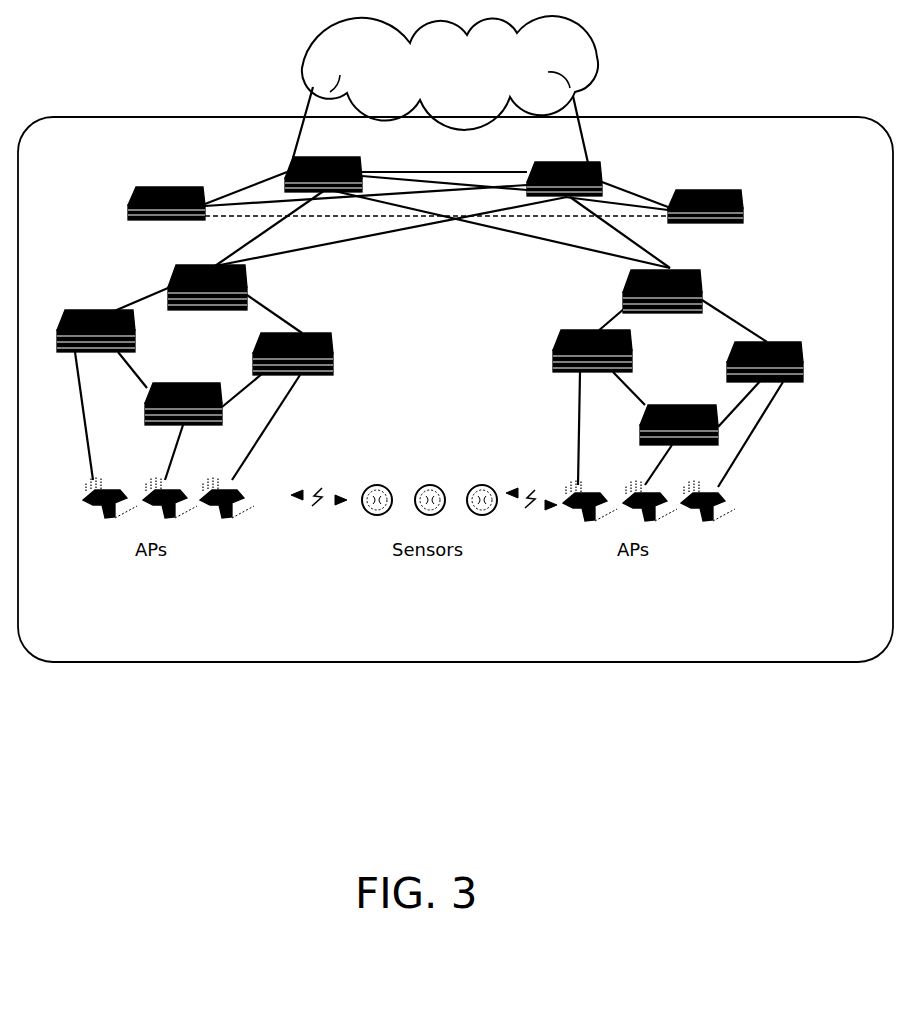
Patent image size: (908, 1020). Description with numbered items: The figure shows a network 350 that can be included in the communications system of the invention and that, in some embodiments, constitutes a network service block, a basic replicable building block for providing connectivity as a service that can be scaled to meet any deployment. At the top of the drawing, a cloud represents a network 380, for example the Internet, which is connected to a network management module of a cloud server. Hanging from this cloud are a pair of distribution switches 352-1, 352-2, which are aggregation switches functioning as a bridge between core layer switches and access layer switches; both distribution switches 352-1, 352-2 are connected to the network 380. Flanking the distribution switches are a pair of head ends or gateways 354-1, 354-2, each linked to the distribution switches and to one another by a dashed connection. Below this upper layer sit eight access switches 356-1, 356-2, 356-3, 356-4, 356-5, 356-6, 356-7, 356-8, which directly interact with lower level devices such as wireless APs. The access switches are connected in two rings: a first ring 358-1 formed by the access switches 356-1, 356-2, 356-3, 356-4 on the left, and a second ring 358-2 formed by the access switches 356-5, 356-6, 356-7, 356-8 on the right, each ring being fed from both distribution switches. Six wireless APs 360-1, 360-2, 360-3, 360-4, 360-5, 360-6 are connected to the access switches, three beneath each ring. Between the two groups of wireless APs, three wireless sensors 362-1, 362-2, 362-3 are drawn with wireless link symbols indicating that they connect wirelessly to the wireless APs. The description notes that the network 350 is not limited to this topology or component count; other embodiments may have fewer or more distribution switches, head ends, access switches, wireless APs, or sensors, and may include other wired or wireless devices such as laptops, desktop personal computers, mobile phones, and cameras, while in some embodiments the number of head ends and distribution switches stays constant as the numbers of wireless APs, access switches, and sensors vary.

The network 350 is at (455, 389).
The network 380 is at (320, 55).
The distribution switch 352-1 is at (347, 160).
The distribution switch 352-2 is at (538, 163).
The head end 354-1 is at (130, 207).
The head end 354-2 is at (743, 207).
The access switch 356-1 is at (175, 267).
The access switch 356-2 is at (73, 310).
The access switch 356-3 is at (148, 405).
The access switch 356-4 is at (330, 347).
The access switch 356-5 is at (723, 268).
The access switch 356-6 is at (555, 348).
The access switch 356-7 is at (642, 433).
The access switch 356-8 is at (830, 342).
The ring 358-1 is at (207, 347).
The ring 358-2 is at (682, 363).
The wireless AP 360-1 is at (77, 495).
The wireless AP 360-2 is at (142, 493).
The wireless AP 360-3 is at (233, 498).
The wireless AP 360-4 is at (570, 507).
The wireless AP 360-5 is at (627, 493).
The wireless AP 360-6 is at (748, 497).
The wireless sensor 362-1 is at (383, 472).
The wireless sensor 362-2 is at (430, 485).
The wireless sensor 362-3 is at (482, 485).